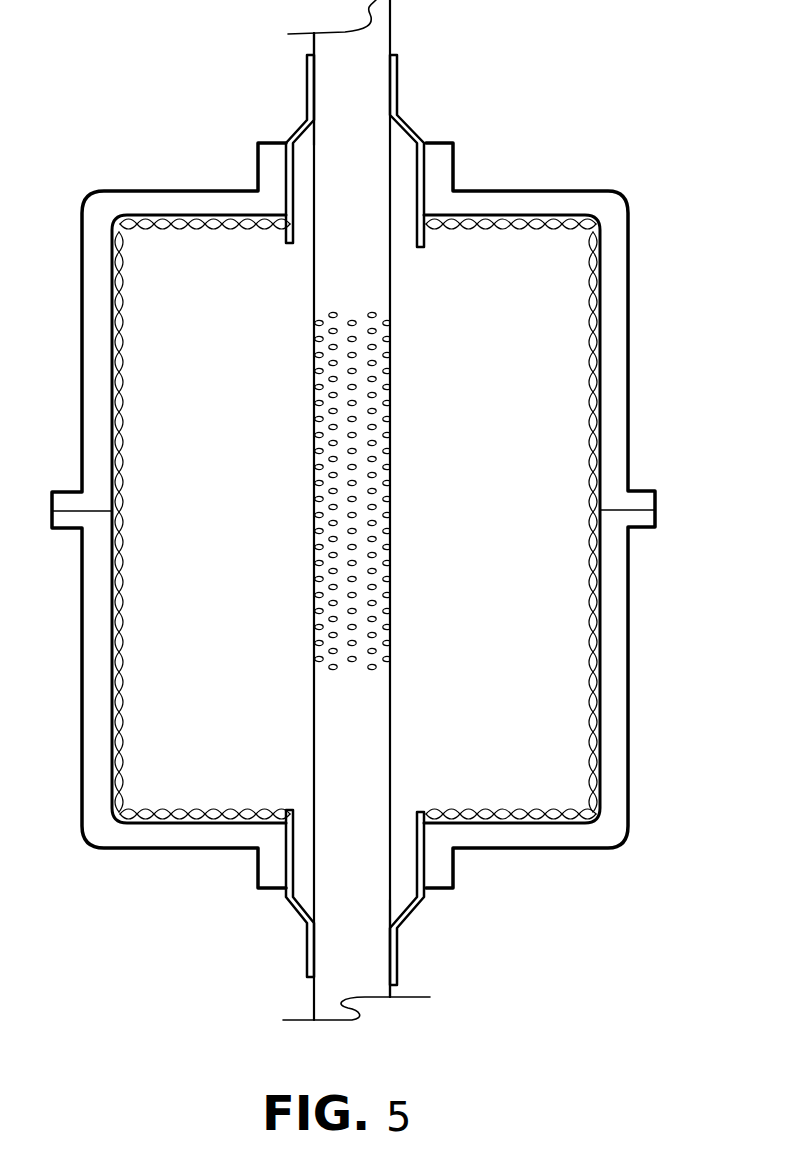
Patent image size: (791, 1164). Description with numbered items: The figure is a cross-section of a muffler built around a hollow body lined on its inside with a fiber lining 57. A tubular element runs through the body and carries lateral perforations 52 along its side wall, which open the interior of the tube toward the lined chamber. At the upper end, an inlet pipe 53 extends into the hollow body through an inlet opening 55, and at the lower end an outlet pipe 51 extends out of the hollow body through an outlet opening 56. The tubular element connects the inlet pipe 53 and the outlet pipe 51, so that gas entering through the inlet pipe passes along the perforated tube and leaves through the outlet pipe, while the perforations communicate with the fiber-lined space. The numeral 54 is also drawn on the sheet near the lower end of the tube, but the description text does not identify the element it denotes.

The outlet pipe 51 is at (373, 740).
The lateral perforations 52 is at (347, 443).
The inlet pipe 53 is at (360, 143).
The outlet end of tube 54 is at (355, 907).
The inlet opening 55 is at (402, 183).
The outlet opening 56 is at (398, 858).
The fiber lining 57 is at (597, 410).